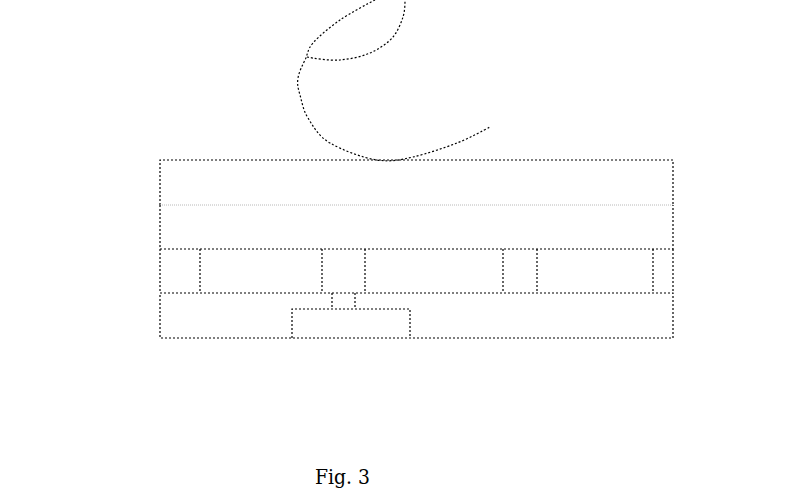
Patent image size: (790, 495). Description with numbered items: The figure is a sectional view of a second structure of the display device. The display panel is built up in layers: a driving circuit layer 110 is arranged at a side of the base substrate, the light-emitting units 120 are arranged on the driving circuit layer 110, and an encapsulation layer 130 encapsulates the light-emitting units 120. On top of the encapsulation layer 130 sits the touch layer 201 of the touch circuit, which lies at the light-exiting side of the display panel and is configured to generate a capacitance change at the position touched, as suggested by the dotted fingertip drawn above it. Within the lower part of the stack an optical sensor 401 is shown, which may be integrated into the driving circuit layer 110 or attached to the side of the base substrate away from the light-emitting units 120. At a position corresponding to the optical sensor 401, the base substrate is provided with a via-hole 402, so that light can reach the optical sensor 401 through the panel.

The touch layer 201 is at (210, 180).
The encapsulation layer 130 is at (183, 228).
The light-emitting units 120 is at (233, 278).
The driving circuit layer 110 is at (182, 315).
The optical sensor 401 is at (335, 333).
The via-hole 402 is at (336, 305).